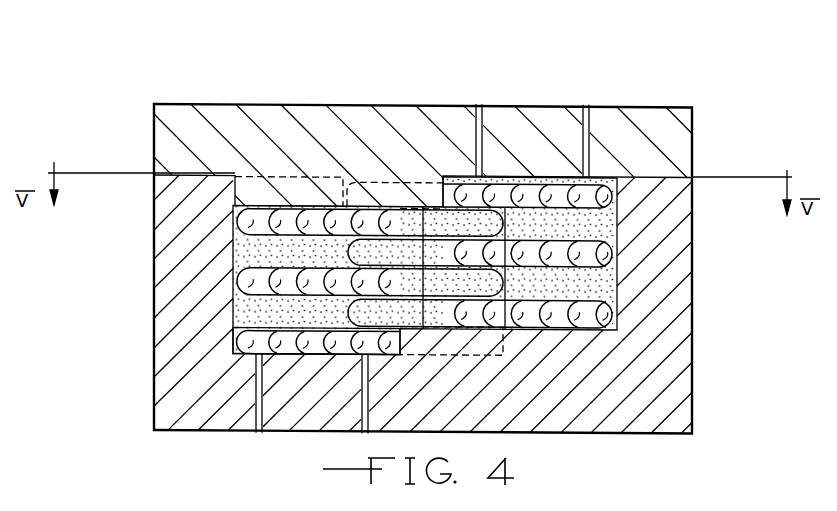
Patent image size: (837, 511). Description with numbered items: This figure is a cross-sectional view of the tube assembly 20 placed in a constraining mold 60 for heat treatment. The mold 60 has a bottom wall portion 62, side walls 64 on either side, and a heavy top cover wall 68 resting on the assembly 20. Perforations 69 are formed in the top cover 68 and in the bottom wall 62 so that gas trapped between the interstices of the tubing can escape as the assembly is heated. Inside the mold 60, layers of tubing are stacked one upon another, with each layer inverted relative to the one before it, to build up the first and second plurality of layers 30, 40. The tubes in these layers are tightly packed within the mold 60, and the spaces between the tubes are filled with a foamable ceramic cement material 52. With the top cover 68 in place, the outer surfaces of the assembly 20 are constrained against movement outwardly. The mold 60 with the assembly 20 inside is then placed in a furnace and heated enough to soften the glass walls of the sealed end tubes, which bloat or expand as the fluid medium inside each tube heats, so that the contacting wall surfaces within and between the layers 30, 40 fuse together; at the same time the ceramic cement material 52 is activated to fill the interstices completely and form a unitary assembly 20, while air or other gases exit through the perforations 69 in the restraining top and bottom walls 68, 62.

The assembly 20 is at (242, 249).
The first plurality of layers 30 is at (613, 312).
The second plurality of layers 40 is at (233, 347).
The foamable ceramic cement material 52 is at (603, 219).
The constraining mold 60 is at (653, 443).
The bottom wall portion 62 is at (578, 434).
The side walls 64 is at (153, 225).
The heavy top cover wall 68 is at (357, 106).
The perforations 69 is at (587, 106).